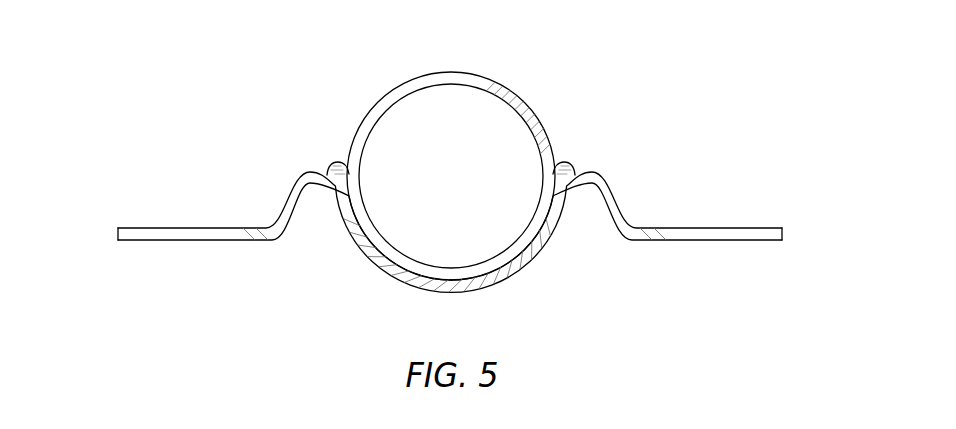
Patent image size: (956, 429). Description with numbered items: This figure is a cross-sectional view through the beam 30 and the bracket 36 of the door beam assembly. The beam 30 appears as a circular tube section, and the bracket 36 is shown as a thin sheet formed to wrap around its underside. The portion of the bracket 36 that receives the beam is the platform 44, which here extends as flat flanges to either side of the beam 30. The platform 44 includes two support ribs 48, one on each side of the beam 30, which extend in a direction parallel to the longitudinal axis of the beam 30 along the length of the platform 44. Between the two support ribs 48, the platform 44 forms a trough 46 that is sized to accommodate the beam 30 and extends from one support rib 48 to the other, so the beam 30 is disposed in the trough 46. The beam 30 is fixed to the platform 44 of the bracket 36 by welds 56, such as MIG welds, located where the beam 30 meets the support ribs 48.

The beam 30 is at (418, 72).
The bracket 36 is at (114, 238).
The platform 44 is at (167, 222).
The trough 46 is at (397, 277).
The support ribs 48 is at (312, 170).
The welds 56 is at (337, 161).